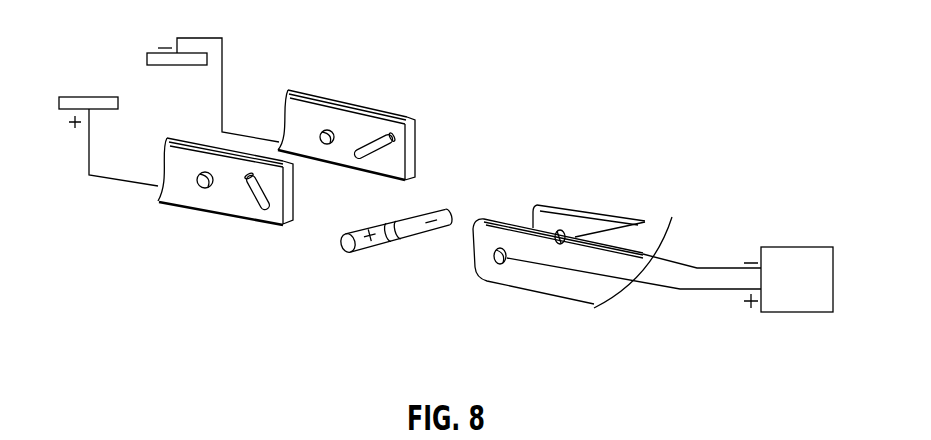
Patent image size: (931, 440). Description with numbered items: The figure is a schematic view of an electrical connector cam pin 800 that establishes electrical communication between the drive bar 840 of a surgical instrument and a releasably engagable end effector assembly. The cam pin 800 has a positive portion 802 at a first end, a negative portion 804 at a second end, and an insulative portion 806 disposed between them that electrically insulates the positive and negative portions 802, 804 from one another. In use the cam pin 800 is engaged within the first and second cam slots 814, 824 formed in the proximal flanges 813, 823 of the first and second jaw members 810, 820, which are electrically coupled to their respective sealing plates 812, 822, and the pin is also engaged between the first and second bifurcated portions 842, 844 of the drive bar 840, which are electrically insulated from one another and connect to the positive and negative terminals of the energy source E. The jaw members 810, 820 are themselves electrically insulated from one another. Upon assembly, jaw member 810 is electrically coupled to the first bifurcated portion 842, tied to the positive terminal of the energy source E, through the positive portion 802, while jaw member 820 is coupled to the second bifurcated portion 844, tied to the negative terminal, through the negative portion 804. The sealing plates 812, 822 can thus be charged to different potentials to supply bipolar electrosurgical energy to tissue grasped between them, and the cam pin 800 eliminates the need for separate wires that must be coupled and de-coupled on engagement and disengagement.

The electrical connector cam pin 800 is at (453, 163).
The positive portion 802 is at (360, 248).
The negative portion 804 is at (443, 212).
The insulative portion 806 is at (397, 223).
The first jaw member 810 is at (167, 217).
The sealing plate 812 is at (97, 96).
The proximal flange 813 is at (213, 215).
The first cam slot 814 is at (278, 222).
The second jaw member 820 is at (307, 92).
The sealing plate 822 is at (152, 52).
The proximal flange 823 is at (348, 125).
The second cam slot 824 is at (402, 138).
The drive bar 840 is at (652, 225).
The first bifurcated portion 842 is at (537, 297).
The second bifurcated portion 844 is at (558, 220).
The energy source E is at (817, 247).